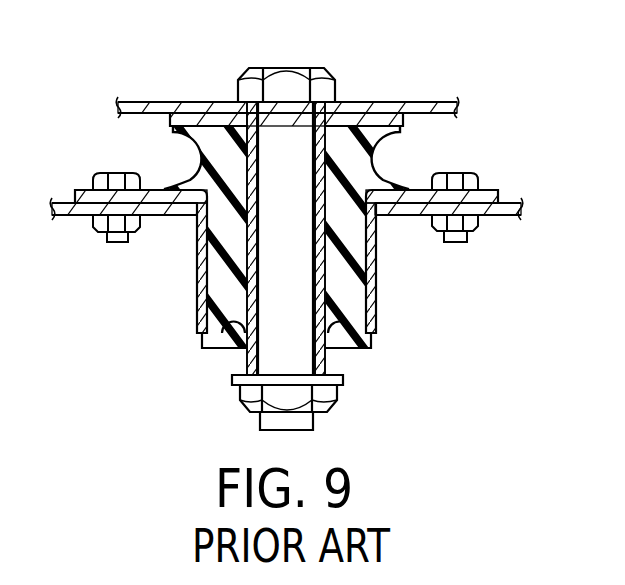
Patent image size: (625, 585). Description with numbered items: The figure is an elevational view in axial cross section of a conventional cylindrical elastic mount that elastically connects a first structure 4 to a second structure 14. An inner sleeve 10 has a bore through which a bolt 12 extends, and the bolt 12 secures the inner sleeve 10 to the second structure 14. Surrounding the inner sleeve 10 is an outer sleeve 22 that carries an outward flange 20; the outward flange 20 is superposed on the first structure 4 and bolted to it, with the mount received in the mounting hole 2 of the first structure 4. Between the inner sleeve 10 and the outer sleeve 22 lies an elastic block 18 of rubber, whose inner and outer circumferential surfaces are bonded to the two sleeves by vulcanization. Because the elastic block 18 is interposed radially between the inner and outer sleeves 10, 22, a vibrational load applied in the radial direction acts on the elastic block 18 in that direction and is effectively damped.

The mounting hole 2 is at (199, 217).
The first structure 4 is at (491, 214).
The inner sleeve 10 is at (247, 299).
The bolt 12 is at (297, 187).
The second structure 14 is at (170, 108).
The elastic block 18 is at (360, 249).
The outward flange 20 is at (449, 191).
The outer sleeve 22 is at (360, 296).